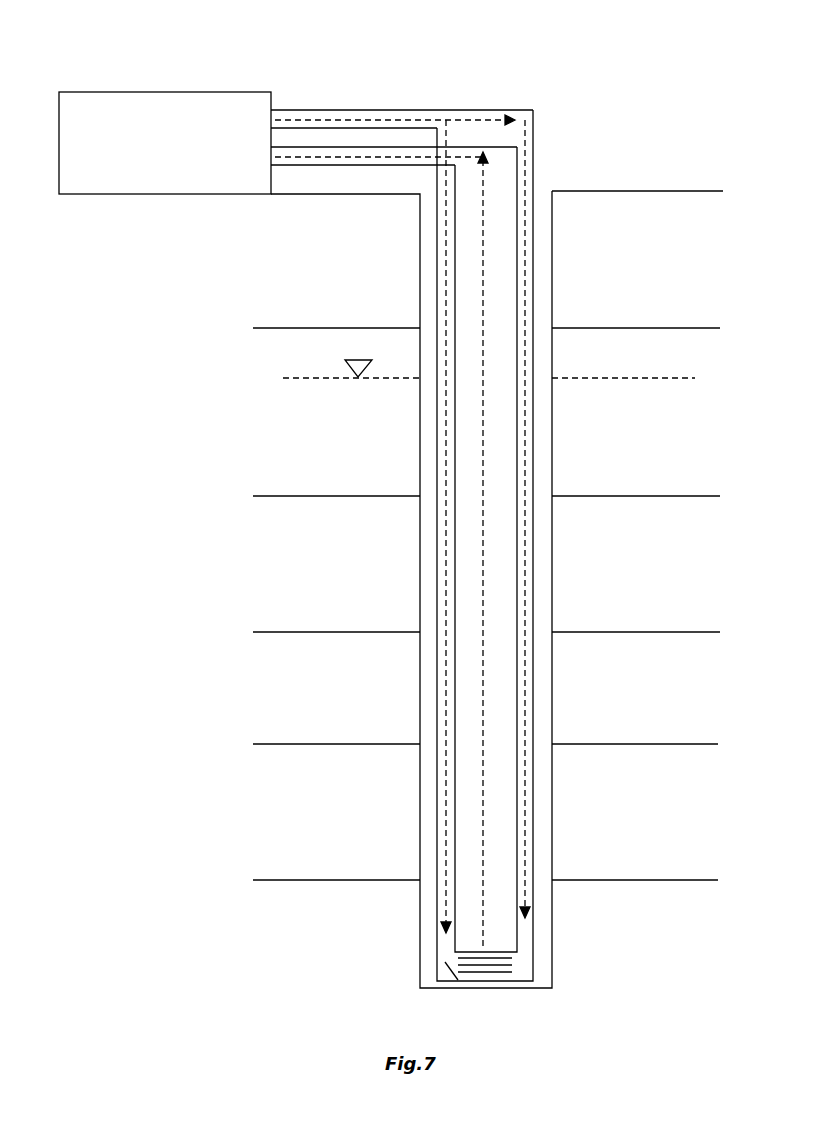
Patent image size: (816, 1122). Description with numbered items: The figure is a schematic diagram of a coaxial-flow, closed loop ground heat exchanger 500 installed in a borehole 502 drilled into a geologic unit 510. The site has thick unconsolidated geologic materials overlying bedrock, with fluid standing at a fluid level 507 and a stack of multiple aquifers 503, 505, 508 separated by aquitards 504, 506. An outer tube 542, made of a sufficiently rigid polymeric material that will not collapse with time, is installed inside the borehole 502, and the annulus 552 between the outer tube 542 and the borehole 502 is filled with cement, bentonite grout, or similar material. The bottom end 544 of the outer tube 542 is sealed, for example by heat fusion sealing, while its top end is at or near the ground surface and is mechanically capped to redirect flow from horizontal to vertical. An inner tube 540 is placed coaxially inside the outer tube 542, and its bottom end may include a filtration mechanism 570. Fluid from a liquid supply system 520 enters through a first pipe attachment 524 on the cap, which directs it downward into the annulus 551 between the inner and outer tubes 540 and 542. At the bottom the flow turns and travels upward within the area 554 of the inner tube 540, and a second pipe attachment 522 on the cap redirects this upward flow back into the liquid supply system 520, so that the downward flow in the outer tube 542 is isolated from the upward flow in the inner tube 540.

The ground heat exchanger 500 is at (427, 70).
The borehole 502 is at (553, 356).
The aquifer 503 is at (486, 478).
The aquitard 504 is at (486, 612).
The aquifer 505 is at (485, 728).
The aquitard 506 is at (485, 858).
The fluid level 507 is at (468, 375).
The aquifer 508 is at (640, 966).
The geologic unit 510 is at (488, 259).
The liquid supply system 520 is at (165, 143).
The second pipe attachment 522 is at (358, 165).
The first pipe attachment 524 is at (533, 168).
The inner tube 540 is at (525, 712).
The outer tube 542 is at (438, 723).
The bottom end 544 is at (437, 960).
The annulus 551 is at (528, 410).
The annulus 552 is at (542, 600).
The area 554 is at (467, 563).
The filtration mechanism 570 is at (512, 963).